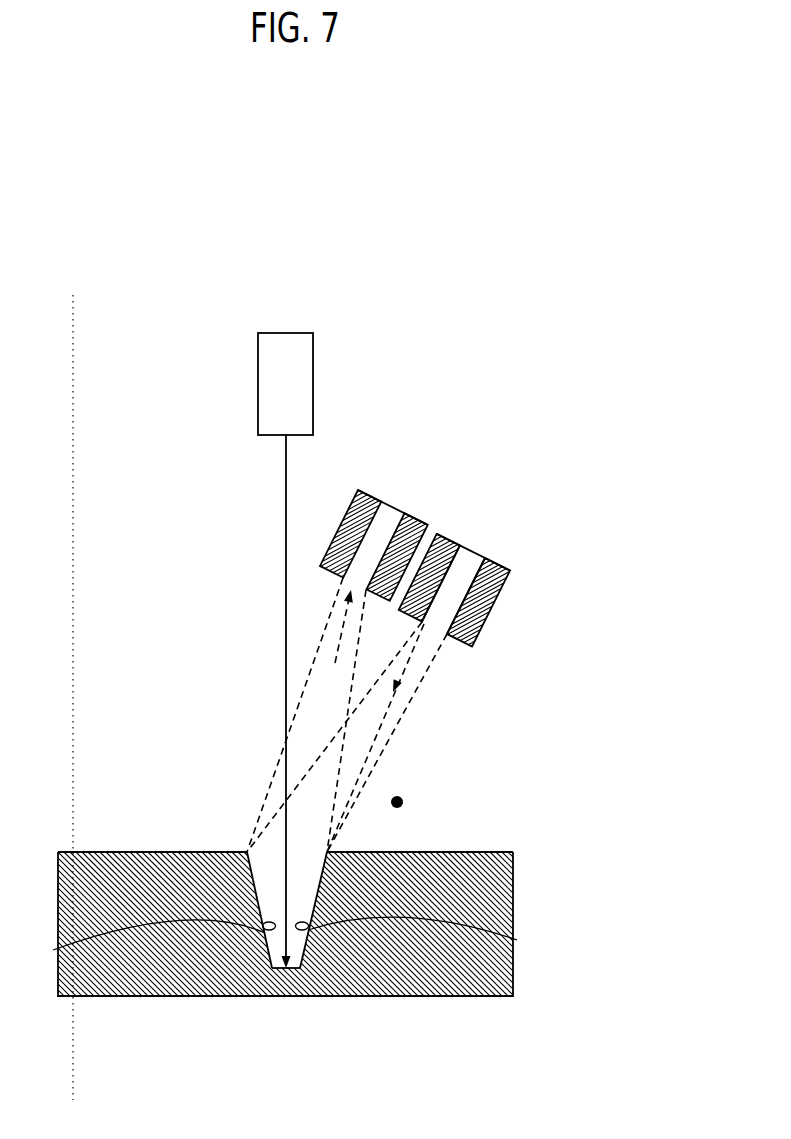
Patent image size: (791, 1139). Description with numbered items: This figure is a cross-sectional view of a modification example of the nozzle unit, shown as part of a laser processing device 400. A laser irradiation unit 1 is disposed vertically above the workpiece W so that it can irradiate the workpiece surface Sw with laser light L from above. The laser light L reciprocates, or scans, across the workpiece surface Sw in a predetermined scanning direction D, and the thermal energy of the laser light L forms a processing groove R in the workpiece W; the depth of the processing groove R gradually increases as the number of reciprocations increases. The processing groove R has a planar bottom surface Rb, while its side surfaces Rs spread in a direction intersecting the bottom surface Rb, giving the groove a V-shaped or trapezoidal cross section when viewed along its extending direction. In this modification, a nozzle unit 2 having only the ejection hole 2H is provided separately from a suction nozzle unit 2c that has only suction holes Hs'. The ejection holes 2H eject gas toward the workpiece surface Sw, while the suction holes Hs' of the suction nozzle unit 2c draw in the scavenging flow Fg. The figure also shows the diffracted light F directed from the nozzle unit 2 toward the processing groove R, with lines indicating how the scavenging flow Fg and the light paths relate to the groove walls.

The laser processing device 400 is at (116, 366).
The laser irradiation unit 1 is at (313, 380).
The laser light L is at (287, 498).
The nozzle unit 2 is at (471, 583).
The suction nozzle unit 2c is at (428, 518).
The ejection hole 2H is at (447, 636).
The suction hole Hs' is at (266, 621).
The scavenging flow Fg is at (310, 675).
The focused diffracted light F is at (407, 713).
The scanning direction D is at (411, 802).
The workpiece surface Sw is at (480, 851).
The workpiece W is at (332, 923).
The processing groove R is at (306, 975).
The bottom surface Rb is at (304, 968).
The side surface Rs is at (286, 940).